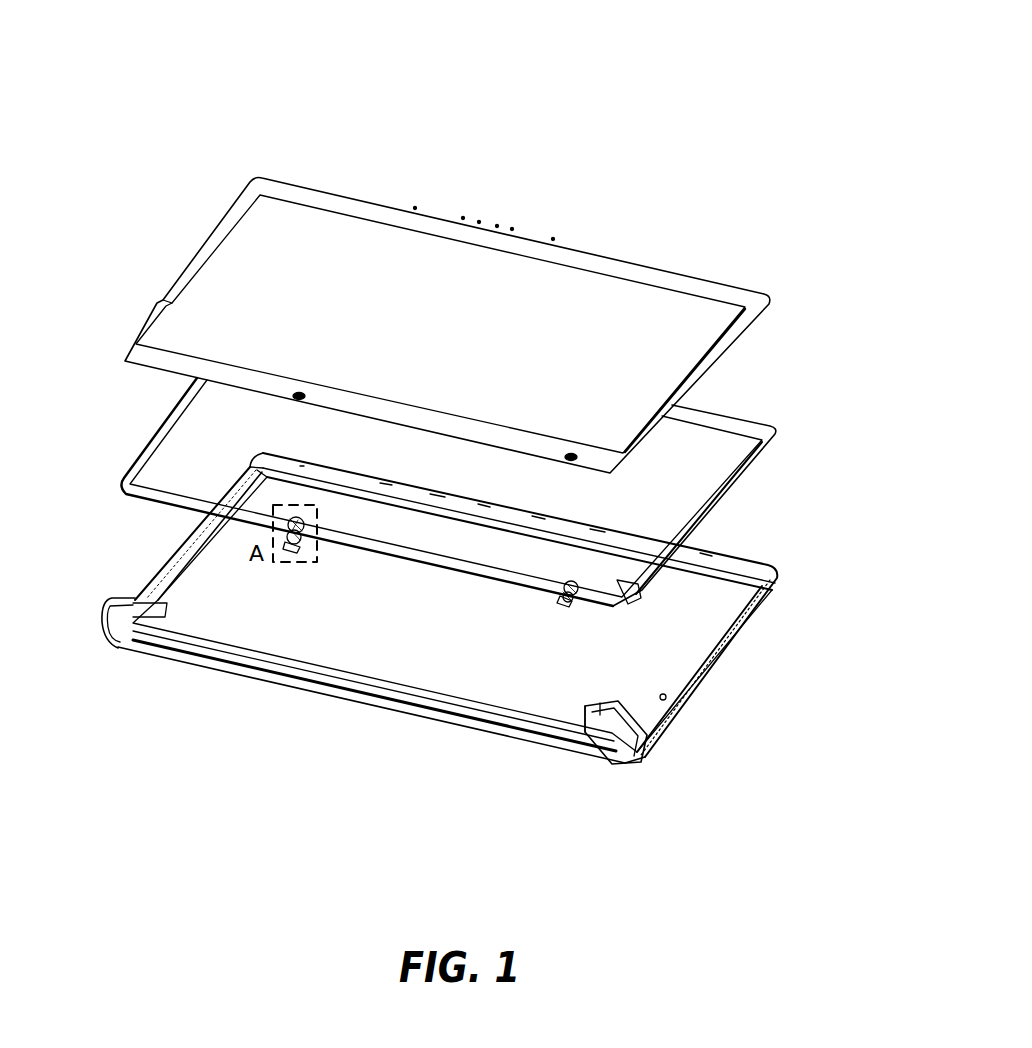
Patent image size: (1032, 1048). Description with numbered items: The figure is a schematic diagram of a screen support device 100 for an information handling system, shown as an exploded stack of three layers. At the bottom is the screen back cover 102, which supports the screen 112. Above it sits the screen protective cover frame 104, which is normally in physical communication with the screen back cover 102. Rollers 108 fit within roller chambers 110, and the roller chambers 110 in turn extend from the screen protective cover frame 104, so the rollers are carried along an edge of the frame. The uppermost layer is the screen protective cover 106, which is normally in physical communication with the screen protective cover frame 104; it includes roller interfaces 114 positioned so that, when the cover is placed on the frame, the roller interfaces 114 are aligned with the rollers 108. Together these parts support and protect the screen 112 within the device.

The screen support device 100 is at (724, 103).
The screen back cover 102 is at (741, 568).
The screen protective cover frame 104 is at (723, 482).
The screen protective cover 106 is at (613, 293).
The rollers 108 is at (292, 523).
The roller chambers 110 is at (292, 547).
The screen 112 is at (660, 643).
The roller interfaces 114 is at (300, 397).